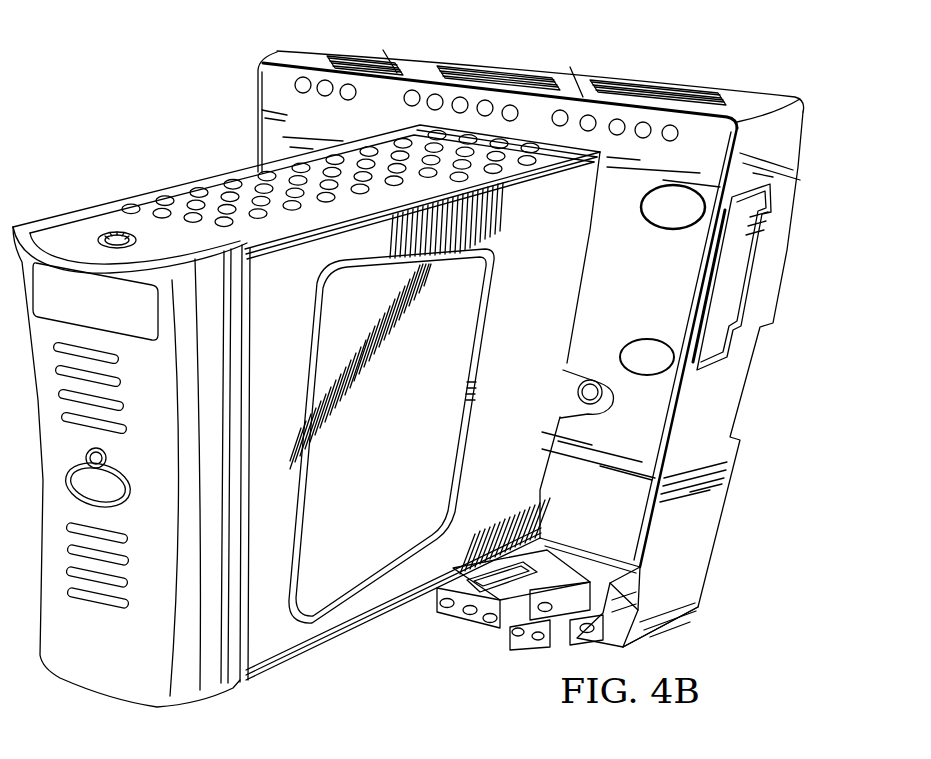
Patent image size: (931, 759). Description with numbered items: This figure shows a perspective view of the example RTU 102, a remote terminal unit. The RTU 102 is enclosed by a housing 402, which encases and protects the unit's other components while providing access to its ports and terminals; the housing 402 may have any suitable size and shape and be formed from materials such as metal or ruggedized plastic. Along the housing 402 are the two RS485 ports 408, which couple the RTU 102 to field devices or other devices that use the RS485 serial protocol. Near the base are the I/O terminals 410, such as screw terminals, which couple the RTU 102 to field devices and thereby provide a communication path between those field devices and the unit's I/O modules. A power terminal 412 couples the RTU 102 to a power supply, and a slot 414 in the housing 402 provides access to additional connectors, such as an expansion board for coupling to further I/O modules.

The RTU 102 is at (95, 78).
The housing 402 is at (173, 154).
The RS485 ports 408 is at (704, 68).
The I/O terminals 410 is at (655, 583).
The power terminal 412 is at (271, 46).
The slot 414 is at (780, 270).